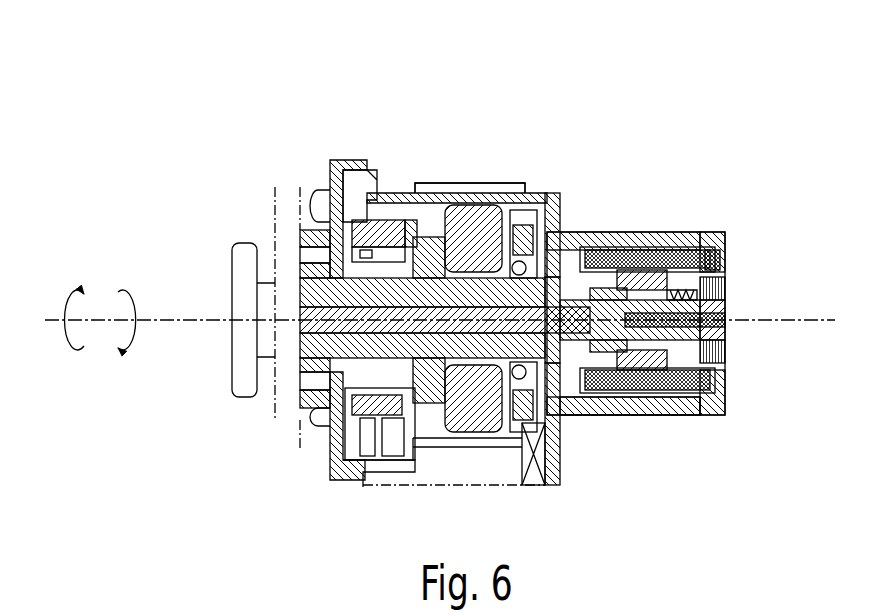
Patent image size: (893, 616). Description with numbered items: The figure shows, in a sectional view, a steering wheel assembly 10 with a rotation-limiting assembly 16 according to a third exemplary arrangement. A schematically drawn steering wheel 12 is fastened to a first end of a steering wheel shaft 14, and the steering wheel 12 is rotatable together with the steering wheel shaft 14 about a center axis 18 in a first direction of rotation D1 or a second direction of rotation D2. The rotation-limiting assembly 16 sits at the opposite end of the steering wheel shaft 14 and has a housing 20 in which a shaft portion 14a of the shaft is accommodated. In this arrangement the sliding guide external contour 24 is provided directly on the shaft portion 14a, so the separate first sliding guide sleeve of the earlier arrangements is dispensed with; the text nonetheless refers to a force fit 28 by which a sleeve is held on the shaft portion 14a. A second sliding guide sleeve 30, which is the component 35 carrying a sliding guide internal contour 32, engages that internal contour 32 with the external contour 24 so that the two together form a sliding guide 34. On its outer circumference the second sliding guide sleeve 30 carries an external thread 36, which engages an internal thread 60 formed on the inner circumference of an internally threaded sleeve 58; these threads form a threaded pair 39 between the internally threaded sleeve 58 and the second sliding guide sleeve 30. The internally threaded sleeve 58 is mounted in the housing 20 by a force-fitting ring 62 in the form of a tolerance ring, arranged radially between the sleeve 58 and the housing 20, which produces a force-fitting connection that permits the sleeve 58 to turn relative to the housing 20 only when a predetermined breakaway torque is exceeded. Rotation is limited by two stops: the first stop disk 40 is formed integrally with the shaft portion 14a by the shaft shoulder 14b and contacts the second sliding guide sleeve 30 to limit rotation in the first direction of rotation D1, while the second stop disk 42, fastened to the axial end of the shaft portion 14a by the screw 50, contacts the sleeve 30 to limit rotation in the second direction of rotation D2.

The steering wheel assembly 10 is at (742, 113).
The steering wheel 12 is at (243, 250).
The steering wheel shaft 14 is at (265, 290).
The shaft portion 14a is at (722, 347).
The shaft shoulder 14b is at (568, 240).
The rotation-limiting assembly 16 is at (780, 132).
The center axis 18 is at (190, 320).
The housing 20 is at (580, 240).
The sliding guide external contour 24 is at (682, 397).
The force fit 28 is at (585, 355).
The second sliding guide sleeve 30 is at (577, 212).
The sliding guide internal contour 32 is at (608, 240).
The sliding guide 34 is at (655, 397).
The component 35 is at (623, 240).
The external thread 36 is at (647, 240).
The threaded pair 39 is at (665, 240).
The first stop disk 40 is at (563, 350).
The second stop disk 42 is at (722, 355).
The screw 50 is at (722, 328).
The internally threaded sleeve 58 is at (722, 256).
The internal thread 60 is at (722, 282).
The force-fitting ring 62 is at (707, 240).
The first direction of rotation D1 is at (128, 290).
The second direction of rotation D2 is at (82, 292).